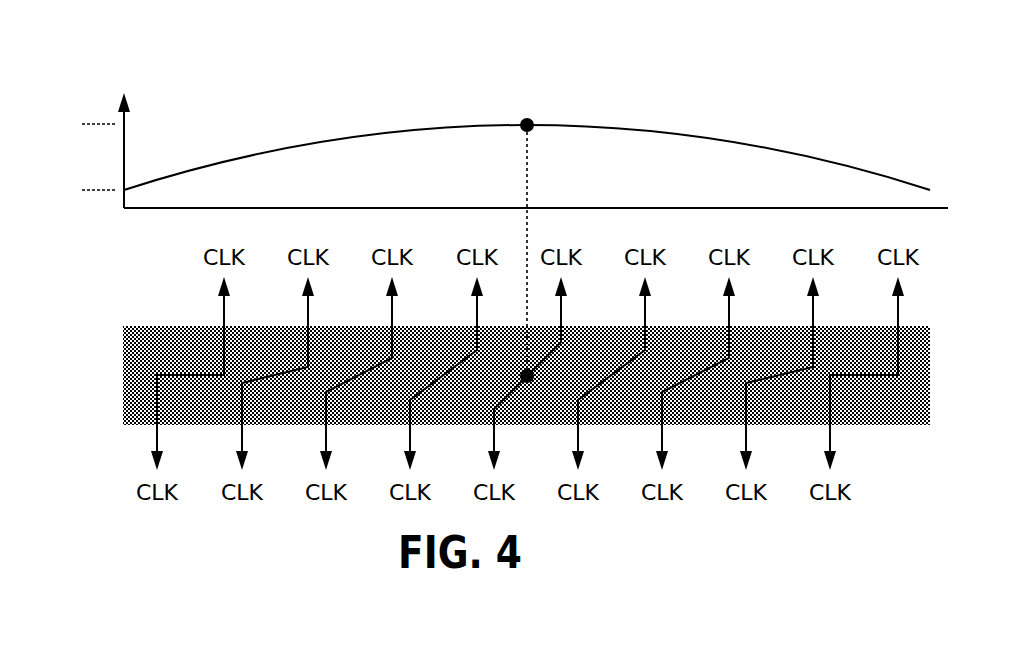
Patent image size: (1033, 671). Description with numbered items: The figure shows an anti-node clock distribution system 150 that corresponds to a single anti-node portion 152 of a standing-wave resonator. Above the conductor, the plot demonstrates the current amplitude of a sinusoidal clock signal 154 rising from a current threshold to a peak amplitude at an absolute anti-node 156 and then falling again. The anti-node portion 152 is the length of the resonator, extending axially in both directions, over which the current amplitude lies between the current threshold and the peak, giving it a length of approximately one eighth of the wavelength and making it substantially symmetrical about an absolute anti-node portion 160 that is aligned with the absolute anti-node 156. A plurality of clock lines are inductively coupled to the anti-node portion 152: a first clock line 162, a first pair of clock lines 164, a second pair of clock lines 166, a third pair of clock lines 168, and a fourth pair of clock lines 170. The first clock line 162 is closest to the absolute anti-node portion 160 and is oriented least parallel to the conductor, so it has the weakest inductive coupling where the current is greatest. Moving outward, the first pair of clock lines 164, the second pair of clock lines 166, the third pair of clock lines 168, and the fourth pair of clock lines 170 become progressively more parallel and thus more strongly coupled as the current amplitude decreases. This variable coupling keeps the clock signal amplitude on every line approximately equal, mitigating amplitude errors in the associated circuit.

The anti-node clock distribution system 150 is at (123, 40).
The anti-node portion 152 is at (140, 323).
The sinusoidal clock signal 154 is at (292, 150).
The absolute anti-node 156 is at (522, 120).
The absolute anti-node portion 160 is at (520, 376).
The first clock line 162 is at (493, 438).
The first pair of clock lines 164 is at (476, 309).
The second pair of clock lines 166 is at (391, 309).
The third pair of clock lines 168 is at (307, 309).
The fourth pair of clock lines 170 is at (223, 309).